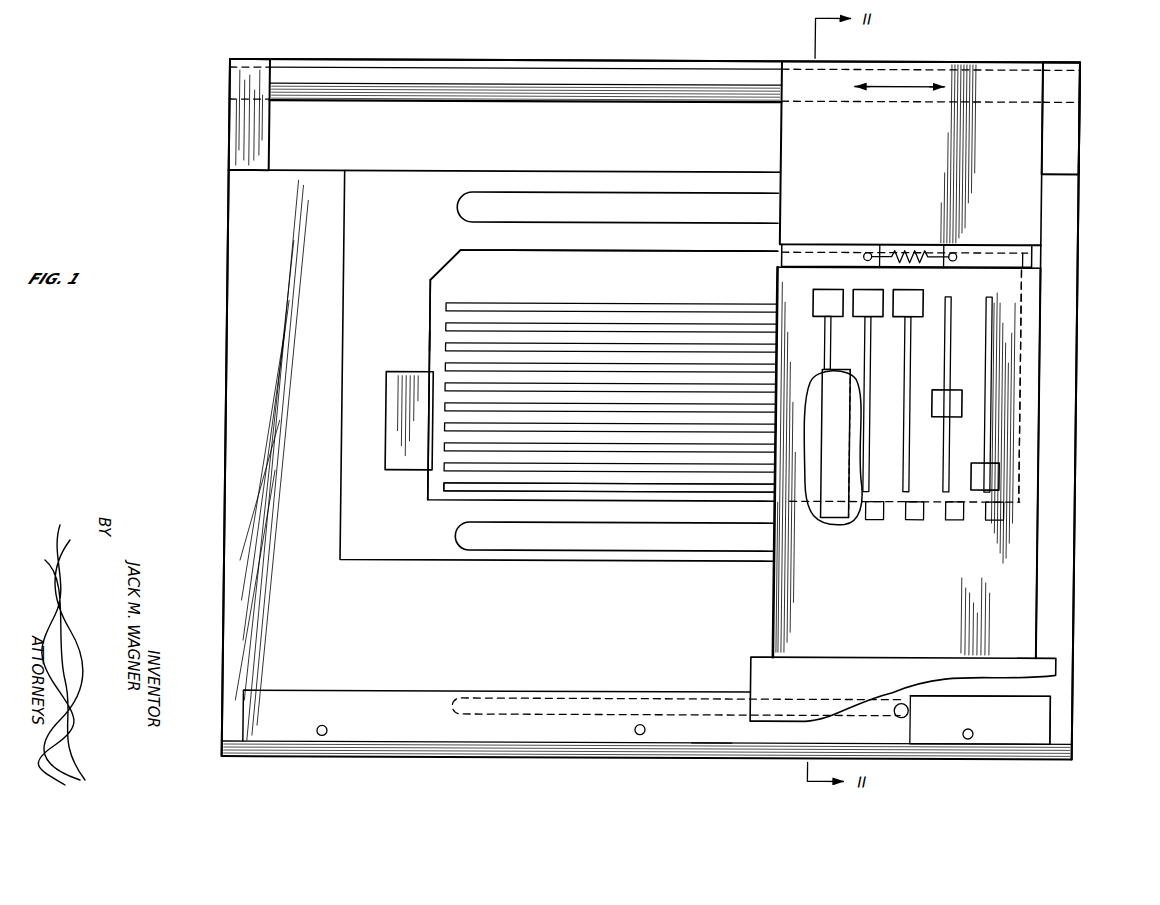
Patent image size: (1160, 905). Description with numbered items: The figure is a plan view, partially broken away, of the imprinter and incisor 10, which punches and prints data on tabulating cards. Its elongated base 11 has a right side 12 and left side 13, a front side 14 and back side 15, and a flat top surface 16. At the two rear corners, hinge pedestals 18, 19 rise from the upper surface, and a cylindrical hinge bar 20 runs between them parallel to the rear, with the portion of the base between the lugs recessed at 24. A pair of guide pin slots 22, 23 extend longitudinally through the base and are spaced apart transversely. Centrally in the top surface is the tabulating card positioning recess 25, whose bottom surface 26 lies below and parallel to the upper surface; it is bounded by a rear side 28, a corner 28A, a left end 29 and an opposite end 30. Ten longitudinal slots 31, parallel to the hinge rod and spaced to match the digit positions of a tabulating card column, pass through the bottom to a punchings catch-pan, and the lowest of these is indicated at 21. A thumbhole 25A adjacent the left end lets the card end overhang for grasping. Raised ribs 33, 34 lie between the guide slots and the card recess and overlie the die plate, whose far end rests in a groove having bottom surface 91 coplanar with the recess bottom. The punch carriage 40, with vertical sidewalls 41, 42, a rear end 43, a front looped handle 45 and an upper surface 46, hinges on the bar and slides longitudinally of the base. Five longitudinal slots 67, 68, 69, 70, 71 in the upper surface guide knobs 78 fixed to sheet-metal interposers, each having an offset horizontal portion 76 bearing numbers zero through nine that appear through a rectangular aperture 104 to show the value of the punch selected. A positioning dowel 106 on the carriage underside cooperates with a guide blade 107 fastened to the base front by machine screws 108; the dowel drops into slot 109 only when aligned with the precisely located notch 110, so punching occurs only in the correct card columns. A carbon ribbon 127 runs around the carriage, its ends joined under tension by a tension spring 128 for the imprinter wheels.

The imprinter and incisor 10 is at (1068, 458).
The base 11 is at (245, 621).
The right side 12 is at (230, 523).
The left side 13 is at (1079, 556).
The front side 14 is at (468, 757).
The back side 15 is at (512, 60).
The top surface 16 is at (418, 626).
The hinge pedestal 18 is at (228, 136).
The hinge pedestal 19 is at (1081, 136).
The hinge bar 20 is at (402, 78).
The lowermost bar 21 is at (560, 498).
The guide pin slot 22 is at (531, 205).
The guide pin slot 23 is at (571, 544).
The recessed portion 24 is at (446, 139).
The tabulating card positioning recess 25 is at (444, 287).
The thumbhole 25A is at (390, 421).
The bottom surface of recess 26 is at (576, 282).
The rear side of recess 28 is at (620, 251).
The corner 28A is at (445, 264).
The left end of recess 29 is at (428, 341).
The end of recess 30 is at (1025, 405).
The longitudinal slots 31 is at (642, 350).
The raised rib 33 is at (700, 210).
The raised rib 34 is at (708, 513).
The punch carriage 40 is at (780, 617).
The sidewall 41 is at (771, 576).
The sidewall 42 is at (1043, 622).
The rear end 43 is at (962, 60).
The looped handle 45 is at (755, 671).
The upper surface 46 is at (903, 631).
The longitudinal slot 67 is at (832, 344).
The longitudinal slot 68 is at (873, 342).
The longitudinal slot 69 is at (913, 342).
The longitudinal slot 70 is at (953, 350).
The longitudinal slot 71 is at (995, 346).
The offset horizontal portion 76 is at (825, 429).
The knob 78 is at (915, 290).
The bottom surface 91 is at (620, 567).
The rectangular aperture 104 is at (879, 519).
The positioning dowel 106 is at (916, 710).
The guide blade 107 is at (490, 693).
The machine screws 108 is at (330, 736).
The slot 109 is at (716, 758).
The notch 110 is at (905, 691).
The carbon ribbon 127 is at (858, 212).
The tension spring 128 is at (924, 212).